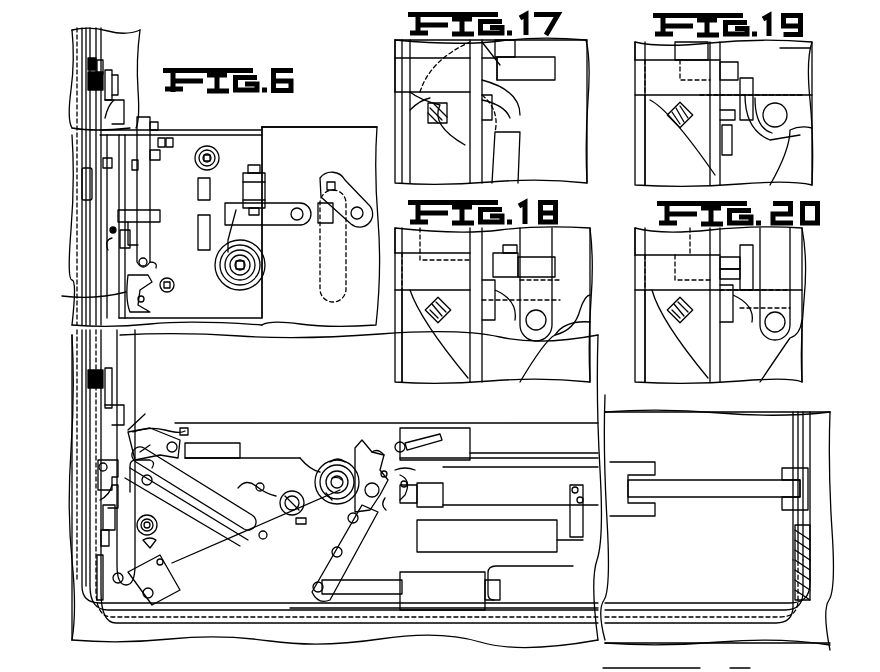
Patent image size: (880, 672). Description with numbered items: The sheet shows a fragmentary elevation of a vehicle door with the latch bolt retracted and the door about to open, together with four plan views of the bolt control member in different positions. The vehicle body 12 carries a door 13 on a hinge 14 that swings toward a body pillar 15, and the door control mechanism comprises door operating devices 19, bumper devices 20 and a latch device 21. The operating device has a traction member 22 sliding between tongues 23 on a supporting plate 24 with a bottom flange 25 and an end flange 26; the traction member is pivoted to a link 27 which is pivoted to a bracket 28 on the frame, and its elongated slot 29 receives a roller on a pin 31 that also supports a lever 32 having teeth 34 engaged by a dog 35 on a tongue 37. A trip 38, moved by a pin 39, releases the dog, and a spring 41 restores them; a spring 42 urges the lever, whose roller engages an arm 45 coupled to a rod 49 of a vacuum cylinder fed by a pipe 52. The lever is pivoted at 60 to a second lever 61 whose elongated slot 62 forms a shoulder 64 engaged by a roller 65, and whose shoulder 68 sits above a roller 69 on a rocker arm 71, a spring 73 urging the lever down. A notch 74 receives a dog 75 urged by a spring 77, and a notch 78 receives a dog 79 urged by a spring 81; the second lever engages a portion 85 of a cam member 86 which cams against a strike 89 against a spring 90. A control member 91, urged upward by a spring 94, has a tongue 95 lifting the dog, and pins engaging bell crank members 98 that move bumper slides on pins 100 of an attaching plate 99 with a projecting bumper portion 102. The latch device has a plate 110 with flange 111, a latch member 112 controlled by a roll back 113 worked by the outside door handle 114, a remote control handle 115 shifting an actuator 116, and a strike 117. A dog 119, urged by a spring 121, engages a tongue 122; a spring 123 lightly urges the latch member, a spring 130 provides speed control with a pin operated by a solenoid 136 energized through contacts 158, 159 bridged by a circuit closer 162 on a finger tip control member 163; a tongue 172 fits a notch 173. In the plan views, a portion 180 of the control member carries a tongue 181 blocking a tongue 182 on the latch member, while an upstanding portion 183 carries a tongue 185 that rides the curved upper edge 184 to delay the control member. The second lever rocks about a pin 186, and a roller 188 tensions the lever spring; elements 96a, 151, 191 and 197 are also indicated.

In FIG. 6, the body 12 is at (812, 640).
In FIG. 6, the door 13 is at (786, 418).
In FIG. 6, the hinge 14 is at (795, 584).
In FIG. 6, the body pillar 15 is at (74, 588).
In FIG. 6, the door operating device 19 is at (258, 421).
In FIG. 6, the bumper device 20 is at (118, 78).
In FIG. 6, the latch device 21 is at (264, 127).
In FIG. 6, the traction member 22 is at (575, 462).
In FIG. 6, the tongue 23 is at (536, 453).
In FIG. 6, the supporting plate 24 is at (286, 422).
In FIG. 6, the bottom flange 25 is at (548, 612).
In FIG. 6, the end flange 26 is at (98, 572).
In FIG. 6, the link 27 is at (703, 490).
In FIG. 6, the bracket 28 is at (785, 500).
In FIG. 6, the elongated slot 29 is at (272, 464).
In FIG. 6, the pin 31 is at (334, 500).
In FIG. 6, the lever 32 is at (380, 452).
In FIG. 6, the teeth 34 is at (371, 476).
In FIG. 6, the dog 35 is at (380, 513).
In FIG. 6, the tongue 37 is at (443, 489).
In FIG. 6, the trip 38 is at (420, 470).
In FIG. 6, the pin 39 is at (386, 470).
In FIG. 6, the spring 41 is at (410, 478).
In FIG. 6, the spring 42 is at (300, 458).
In FIG. 6, the arm 45 is at (352, 548).
In FIG. 6, the rod 49 is at (360, 590).
In FIG. 6, the pipe 52 is at (572, 567).
In FIG. 6, the pivot 60 is at (290, 515).
In FIG. 6, the second lever 61 is at (238, 535).
In FIG. 6, the elongated slot 62 is at (185, 484).
In FIG. 6, the shoulder 64 is at (160, 470).
In FIG. 6, the roller 65 is at (152, 482).
In FIG. 6, the shoulder 68 is at (154, 542).
In FIG. 6, the roller 69 is at (166, 564).
In FIG. 6, the rocker arm 71 is at (170, 585).
In FIG. 6, the spring 73 is at (250, 491).
In FIG. 6, the notch 74 is at (151, 442).
In FIG. 6, the dog 75 is at (156, 430).
In FIG. 6, the spring 77 is at (185, 428).
In FIG. 6, the notch 78 is at (322, 462).
In FIG. 6, the dog 79 is at (460, 455).
In FIG. 6, the spring 81 is at (420, 435).
In FIG. 6, the portion 85 is at (108, 505).
In FIG. 6, the cam member 86 is at (98, 472).
In FIG. 6, the strike 89 is at (100, 495).
In FIG. 6, the spring 90 is at (105, 530).
In FIG. 6, the control member 91 is at (150, 120).
In FIG. 17, the control member 91 is at (470, 172).
In FIG. 19, the control member 91 is at (712, 165).
In FIG. 18, the control member 91 is at (470, 358).
In FIG. 20, the control member 91 is at (710, 358).
In FIG. 6, the spring 94 is at (160, 530).
In FIG. 6, the tongue 95 is at (146, 415).
In FIG. 6, the connector 96a is at (500, 592).
In FIG. 6, the bell crank member 98 is at (124, 108).
In FIG. 6, the attaching plate 99 is at (92, 58).
In FIG. 6, the pin 100 is at (100, 62).
In FIG. 6, the bumper portion 102 is at (88, 81).
In FIG. 6, the plate 110 is at (262, 150).
In FIG. 17, the plate 110 is at (400, 40).
In FIG. 19, the plate 110 is at (800, 172).
In FIG. 18, the plate 110 is at (580, 363).
In FIG. 20, the plate 110 is at (795, 360).
In FIG. 17, the flange 111 is at (396, 42).
In FIG. 19, the flange 111 is at (636, 42).
In FIG. 18, the flange 111 is at (397, 228).
In FIG. 20, the flange 111 is at (637, 228).
In FIG. 6, the latch member 112 is at (285, 226).
In FIG. 17, the latch member 112 is at (585, 88).
In FIG. 19, the latch member 112 is at (812, 68).
In FIG. 18, the latch member 112 is at (588, 270).
In FIG. 20, the latch member 112 is at (802, 262).
In FIG. 6, the roll back 113 is at (110, 229).
In FIG. 17, the roll back 113 is at (425, 115).
In FIG. 19, the roll back 113 is at (652, 100).
In FIG. 18, the roll back 113 is at (428, 328).
In FIG. 20, the roll back 113 is at (668, 328).
In FIG. 6, the outside door handle 114 is at (108, 246).
In FIG. 17, the outside door handle 114 is at (410, 105).
In FIG. 19, the outside door handle 114 is at (668, 115).
In FIG. 6, the remote control handle 115 is at (345, 266).
In FIG. 6, the actuator 116 is at (333, 222).
In FIG. 6, the strike 117 is at (84, 184).
In FIG. 6, the dog 119 is at (152, 295).
In FIG. 6, the spring 121 is at (174, 284).
In FIG. 6, the tongue 122 is at (66, 294).
In FIG. 6, the spring 123 is at (216, 152).
In FIG. 6, the spring 130 is at (246, 276).
In FIG. 6, the solenoid 136 is at (266, 188).
In FIG. 6, the motor 151 is at (452, 566).
In FIG. 6, the contact 158 is at (165, 132).
In FIG. 6, the second contact 159 is at (171, 138).
In FIG. 6, the circuit closer 162 is at (158, 155).
In FIG. 6, the finger tip control member 163 is at (158, 126).
In FIG. 17, the finger tip control member 163 is at (512, 153).
In FIG. 19, the finger tip control member 163 is at (790, 50).
In FIG. 18, the finger tip control member 163 is at (585, 335).
In FIG. 6, the tongue 172 is at (157, 264).
In FIG. 6, the notch 173 is at (165, 245).
In FIG. 6, the portion 180 is at (135, 236).
In FIG. 17, the portion 180 is at (520, 105).
In FIG. 19, the portion 180 is at (754, 141).
In FIG. 18, the portion 180 is at (498, 340).
In FIG. 20, the portion 180 is at (738, 338).
In FIG. 17, the tongue 181 is at (508, 116).
In FIG. 19, the tongue 181 is at (742, 147).
In FIG. 18, the tongue 181 is at (508, 325).
In FIG. 20, the tongue 181 is at (745, 325).
In FIG. 6, the tongue 182 is at (158, 214).
In FIG. 17, the tongue 182 is at (555, 70).
In FIG. 19, the tongue 182 is at (735, 60).
In FIG. 18, the tongue 182 is at (555, 265).
In FIG. 20, the tongue 182 is at (745, 276).
In FIG. 17, the portion 183 is at (505, 70).
In FIG. 19, the portion 183 is at (740, 120).
In FIG. 18, the portion 183 is at (518, 265).
In FIG. 20, the portion 183 is at (745, 262).
In FIG. 17, the curved upper edge 184 is at (540, 58).
In FIG. 19, the curved upper edge 184 is at (691, 51).
In FIG. 17, the tongue 185 is at (515, 45).
In FIG. 19, the tongue 185 is at (753, 82).
In FIG. 18, the tongue 185 is at (517, 248).
In FIG. 20, the tongue 185 is at (753, 248).
In FIG. 6, the pin 186 is at (264, 539).
In FIG. 6, the roller 188 is at (338, 462).
In FIG. 6, the stop 191 is at (306, 522).
In FIG. 6, the housing 197 is at (503, 530).